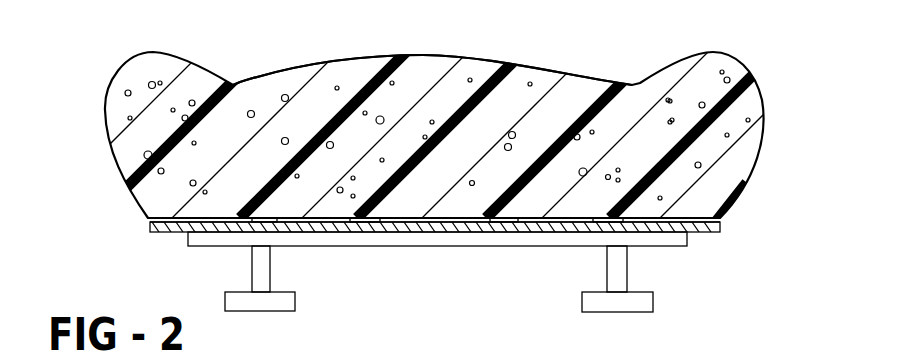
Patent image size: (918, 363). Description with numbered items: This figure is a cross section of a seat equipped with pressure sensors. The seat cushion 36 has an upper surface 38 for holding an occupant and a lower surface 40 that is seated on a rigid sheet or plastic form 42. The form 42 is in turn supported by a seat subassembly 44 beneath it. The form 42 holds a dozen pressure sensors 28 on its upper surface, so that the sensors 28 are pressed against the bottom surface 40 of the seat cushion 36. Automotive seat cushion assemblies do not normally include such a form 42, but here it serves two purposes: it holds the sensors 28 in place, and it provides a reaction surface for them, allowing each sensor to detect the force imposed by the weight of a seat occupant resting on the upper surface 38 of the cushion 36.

The seat cushion 36 is at (712, 77).
The upper surface 38 is at (477, 60).
The pressure sensors 28 is at (265, 222).
The lower surface 40 is at (187, 239).
The seat subassembly 44 is at (462, 240).
The rigid sheet or plastic form 42 is at (647, 224).